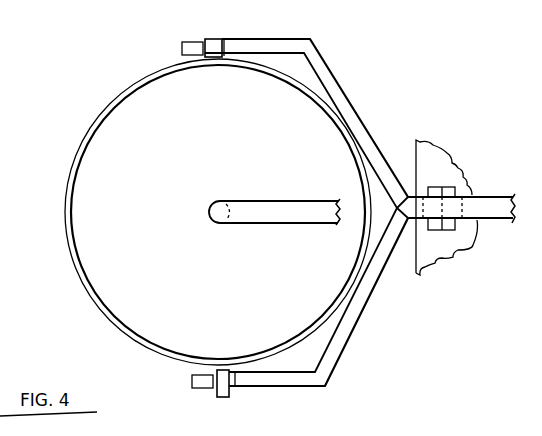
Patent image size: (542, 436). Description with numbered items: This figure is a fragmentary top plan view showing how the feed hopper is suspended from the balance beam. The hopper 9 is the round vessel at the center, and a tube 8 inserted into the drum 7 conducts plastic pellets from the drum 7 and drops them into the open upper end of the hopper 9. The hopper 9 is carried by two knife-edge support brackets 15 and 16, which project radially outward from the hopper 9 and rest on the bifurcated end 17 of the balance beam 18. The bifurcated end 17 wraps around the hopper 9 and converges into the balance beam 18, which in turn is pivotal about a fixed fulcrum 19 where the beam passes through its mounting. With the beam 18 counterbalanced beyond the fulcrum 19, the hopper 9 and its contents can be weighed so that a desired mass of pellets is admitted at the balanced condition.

The hopper 9 is at (113, 100).
The tube 8 is at (292, 208).
The bifurcated end 17 is at (348, 325).
The knife-edge support bracket 16 is at (213, 40).
The knife-edge support bracket 15 is at (224, 395).
The balance beam 18 is at (494, 192).
The fulcrum 19 is at (450, 228).
The drum 7 is at (541, 388).